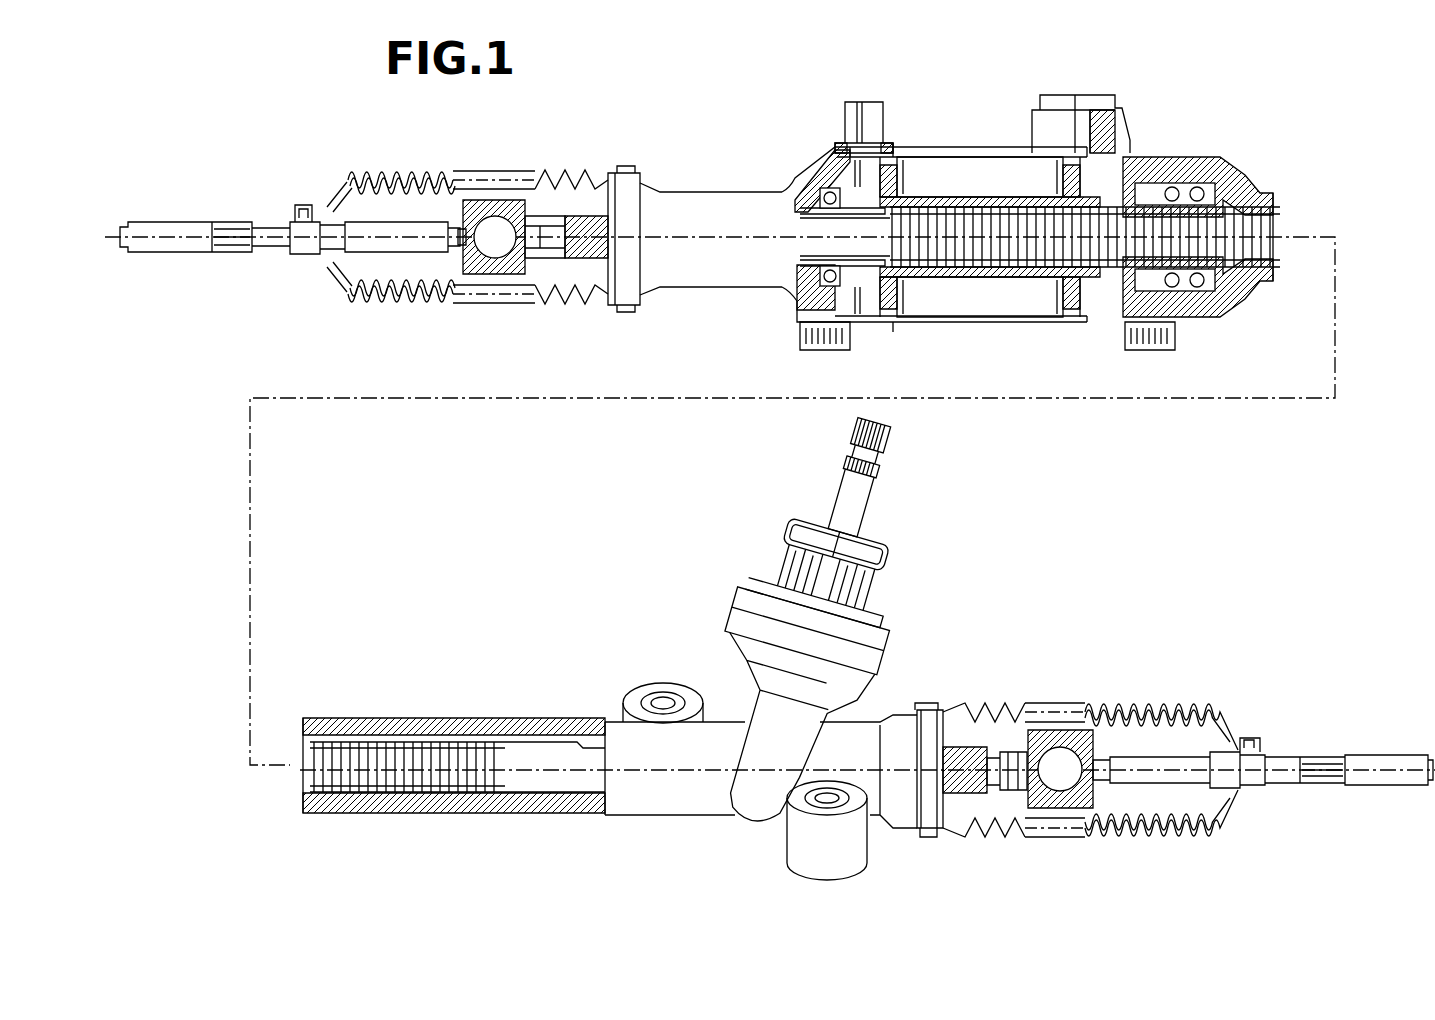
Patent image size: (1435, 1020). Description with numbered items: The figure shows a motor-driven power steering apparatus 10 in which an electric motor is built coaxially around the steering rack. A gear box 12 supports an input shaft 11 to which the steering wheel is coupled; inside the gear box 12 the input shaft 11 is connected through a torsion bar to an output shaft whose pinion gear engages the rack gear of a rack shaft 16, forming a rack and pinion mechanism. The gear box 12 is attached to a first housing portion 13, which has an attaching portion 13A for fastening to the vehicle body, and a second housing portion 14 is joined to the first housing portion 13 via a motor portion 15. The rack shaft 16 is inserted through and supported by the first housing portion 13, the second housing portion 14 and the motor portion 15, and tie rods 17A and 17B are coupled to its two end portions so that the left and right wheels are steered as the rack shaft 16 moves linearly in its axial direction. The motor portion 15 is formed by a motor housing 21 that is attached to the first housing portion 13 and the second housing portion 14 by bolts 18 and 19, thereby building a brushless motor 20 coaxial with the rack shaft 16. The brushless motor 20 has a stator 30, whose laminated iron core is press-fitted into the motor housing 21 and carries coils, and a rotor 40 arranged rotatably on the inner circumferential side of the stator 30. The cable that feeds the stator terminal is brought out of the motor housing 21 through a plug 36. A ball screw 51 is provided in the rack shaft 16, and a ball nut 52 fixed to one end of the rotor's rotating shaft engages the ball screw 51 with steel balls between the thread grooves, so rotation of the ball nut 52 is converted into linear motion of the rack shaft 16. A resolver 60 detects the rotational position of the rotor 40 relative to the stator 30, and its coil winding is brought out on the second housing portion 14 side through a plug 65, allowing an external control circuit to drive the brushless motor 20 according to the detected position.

The motor-driven power steering apparatus 10 is at (1316, 131).
The input shaft 11 is at (865, 493).
The gear box 12 is at (752, 643).
The first housing portion 13 is at (670, 806).
The attaching portion 13A is at (787, 847).
The second housing portion 14 is at (722, 198).
The motor portion 15 is at (963, 153).
The rack shaft 16 is at (807, 247).
The tie rod 17A is at (173, 222).
The tie rod 17B is at (1388, 757).
The bolt 18 is at (1175, 350).
The bolt 19 is at (802, 348).
The brushless motor 20 is at (998, 152).
The motor housing 21 is at (923, 153).
The stator 30 is at (1013, 312).
The plug 36 is at (1108, 118).
The rotor 40 is at (957, 290).
The ball screw 51 is at (1259, 262).
The ball nut 52 is at (1226, 190).
The resolver 60 is at (848, 190).
The plug 65 is at (872, 108).